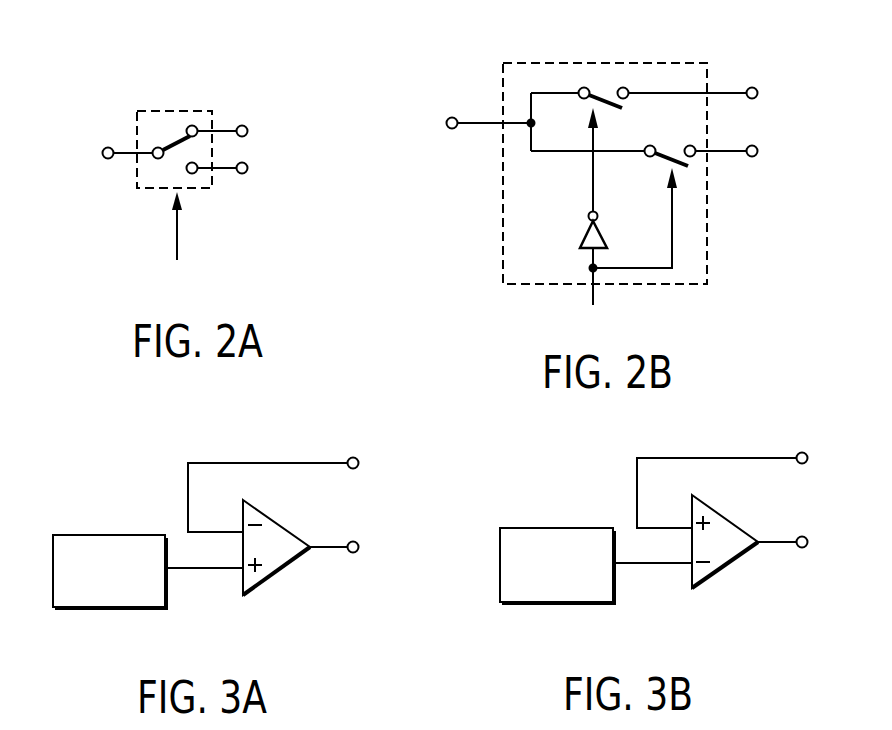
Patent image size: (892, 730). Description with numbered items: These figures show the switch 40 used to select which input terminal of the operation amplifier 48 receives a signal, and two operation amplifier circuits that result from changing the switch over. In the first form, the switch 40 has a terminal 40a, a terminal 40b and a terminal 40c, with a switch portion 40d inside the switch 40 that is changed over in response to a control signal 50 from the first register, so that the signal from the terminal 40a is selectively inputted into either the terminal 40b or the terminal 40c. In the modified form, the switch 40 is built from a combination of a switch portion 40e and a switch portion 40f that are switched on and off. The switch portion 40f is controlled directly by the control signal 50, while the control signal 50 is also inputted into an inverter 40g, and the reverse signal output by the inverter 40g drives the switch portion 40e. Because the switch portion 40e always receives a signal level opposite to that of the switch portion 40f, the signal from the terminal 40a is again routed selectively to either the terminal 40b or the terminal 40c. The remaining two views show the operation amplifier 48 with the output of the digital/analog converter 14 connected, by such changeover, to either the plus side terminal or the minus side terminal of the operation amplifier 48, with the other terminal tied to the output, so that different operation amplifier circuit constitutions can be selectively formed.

In FIG. 2A, the switch 40 is at (158, 108).
In FIG. 2B, the switch 40 is at (545, 62).
In FIG. 2A, the terminal 40a is at (108, 160).
In FIG. 2B, the terminal 40a is at (452, 129).
In FIG. 2A, the terminal 40b is at (248, 126).
In FIG. 2B, the terminal 40b is at (752, 88).
In FIG. 2A, the terminal 40c is at (248, 171).
In FIG. 2B, the terminal 40c is at (753, 157).
In FIG. 2A, the switch portion 40d is at (175, 143).
In FIG. 2B, the switch portion 40e is at (607, 90).
In FIG. 2B, the switch portion 40f is at (684, 168).
In FIG. 2B, the inverter 40g is at (607, 243).
In FIG. 2A, the control signal 50 is at (176, 242).
In FIG. 2B, the control signal 50 is at (592, 292).
In FIG. 3A, the digital/analog (D/A) converter 14 is at (135, 612).
In FIG. 3B, the digital/analog (D/A) converter 14 is at (582, 605).
In FIG. 3A, the operation amplifier 48 is at (285, 572).
In FIG. 3B, the operation amplifier 48 is at (733, 568).